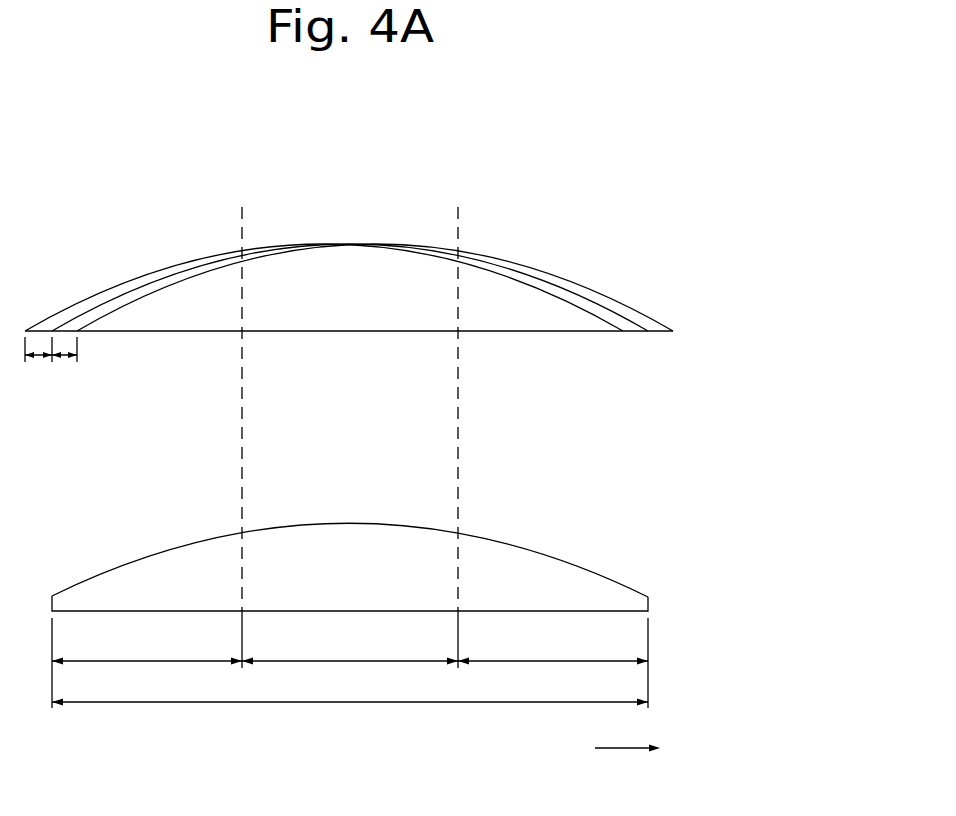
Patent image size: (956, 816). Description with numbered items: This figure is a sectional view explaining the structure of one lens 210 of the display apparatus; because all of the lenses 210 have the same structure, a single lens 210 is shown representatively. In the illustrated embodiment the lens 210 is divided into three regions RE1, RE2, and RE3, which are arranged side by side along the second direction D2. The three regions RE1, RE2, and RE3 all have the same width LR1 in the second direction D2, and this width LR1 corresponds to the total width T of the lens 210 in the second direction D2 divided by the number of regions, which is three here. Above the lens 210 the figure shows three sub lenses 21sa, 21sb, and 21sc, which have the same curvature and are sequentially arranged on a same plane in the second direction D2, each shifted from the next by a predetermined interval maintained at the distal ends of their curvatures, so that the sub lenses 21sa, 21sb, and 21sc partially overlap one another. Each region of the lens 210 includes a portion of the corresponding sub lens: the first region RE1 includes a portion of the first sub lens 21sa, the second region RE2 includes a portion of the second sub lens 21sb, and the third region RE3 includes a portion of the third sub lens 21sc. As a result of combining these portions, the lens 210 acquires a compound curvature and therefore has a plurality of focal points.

The first sub lens 21sa is at (125, 281).
The second sub lens 21sb is at (158, 278).
The third sub lens 21sc is at (230, 253).
The lens 210 is at (363, 539).
The first region RE1 is at (135, 572).
The second region RE2 is at (347, 533).
The third region RE3 is at (543, 565).
The width of region LR1 is at (350, 675).
The width of lens T is at (350, 716).
The second direction D2 is at (642, 750).